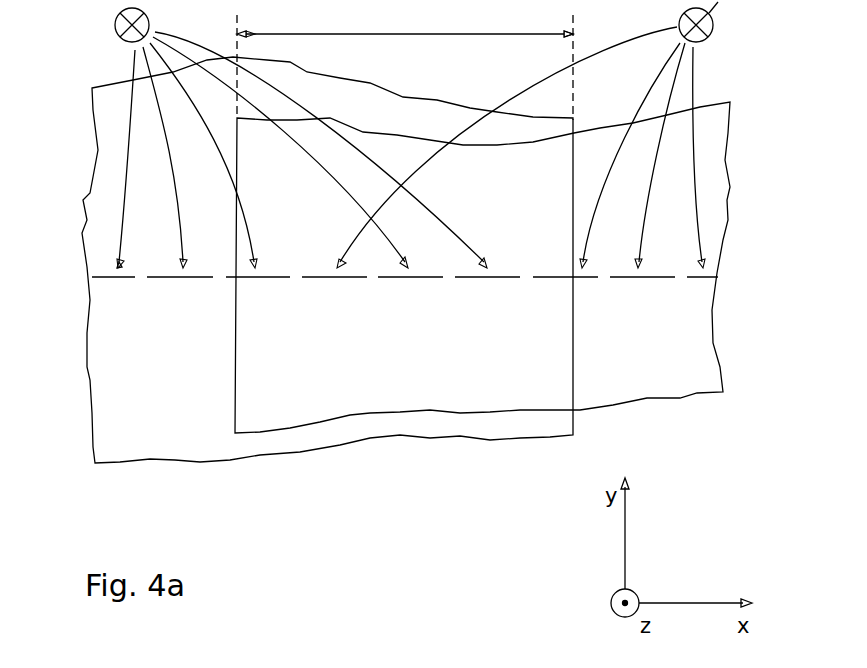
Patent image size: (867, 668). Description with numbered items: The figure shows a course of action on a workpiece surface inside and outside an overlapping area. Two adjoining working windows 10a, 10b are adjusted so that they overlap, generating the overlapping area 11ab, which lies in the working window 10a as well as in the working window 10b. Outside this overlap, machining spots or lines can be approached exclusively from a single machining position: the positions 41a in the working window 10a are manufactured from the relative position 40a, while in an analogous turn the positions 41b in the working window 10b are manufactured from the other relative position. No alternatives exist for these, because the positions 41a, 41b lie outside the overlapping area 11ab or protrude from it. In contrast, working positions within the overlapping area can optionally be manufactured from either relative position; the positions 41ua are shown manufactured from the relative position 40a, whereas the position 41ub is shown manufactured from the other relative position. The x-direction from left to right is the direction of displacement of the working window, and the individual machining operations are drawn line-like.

The working window 10a is at (157, 442).
The working window 10b is at (670, 385).
The overlapping area 11ab is at (405, 64).
The relative position 40a is at (117, 27).
The positions 41a is at (252, 278).
The positions 41b is at (698, 278).
The positions 41ua is at (430, 278).
The position 41ub is at (337, 278).